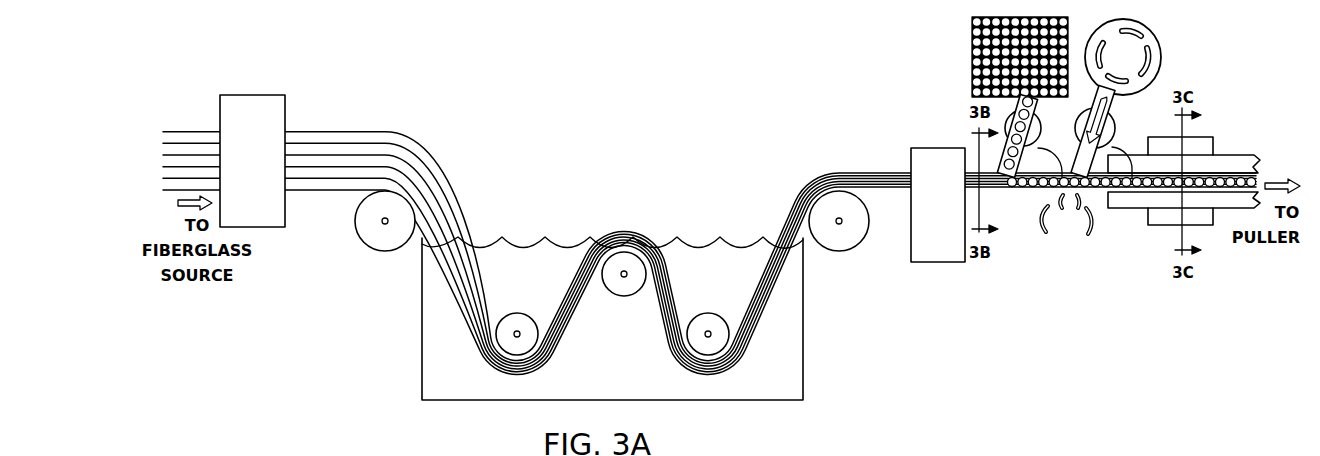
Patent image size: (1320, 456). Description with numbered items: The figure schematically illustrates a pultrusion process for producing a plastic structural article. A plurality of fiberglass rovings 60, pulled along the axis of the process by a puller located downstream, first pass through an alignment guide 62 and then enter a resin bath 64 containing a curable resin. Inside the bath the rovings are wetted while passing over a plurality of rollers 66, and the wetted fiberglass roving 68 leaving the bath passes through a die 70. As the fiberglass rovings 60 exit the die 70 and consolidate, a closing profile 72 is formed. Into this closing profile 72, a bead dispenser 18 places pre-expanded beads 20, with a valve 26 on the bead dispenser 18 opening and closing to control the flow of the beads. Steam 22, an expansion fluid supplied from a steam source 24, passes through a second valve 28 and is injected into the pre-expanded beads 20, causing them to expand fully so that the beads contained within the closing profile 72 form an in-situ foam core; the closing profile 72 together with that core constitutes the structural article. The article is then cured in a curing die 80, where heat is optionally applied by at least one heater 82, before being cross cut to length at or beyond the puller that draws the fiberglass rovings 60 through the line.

The bead dispenser 18 is at (972, 42).
The pre-expanded beads 20 is at (988, 72).
The steam 22 is at (1120, 158).
The steam source 24 is at (1160, 47).
The valve 26 is at (1070, 200).
The valve 28 is at (1113, 120).
The fiberglass rovings 60 is at (362, 131).
The alignment guide 62 is at (245, 95).
The resin bath 64 is at (422, 333).
The rollers 66 is at (515, 366).
The wetted fiberglass roving 68 is at (853, 172).
The die 70 is at (934, 250).
The closing profile 72 is at (1005, 190).
The curing die 80 is at (1222, 208).
The heater 82 is at (1210, 137).